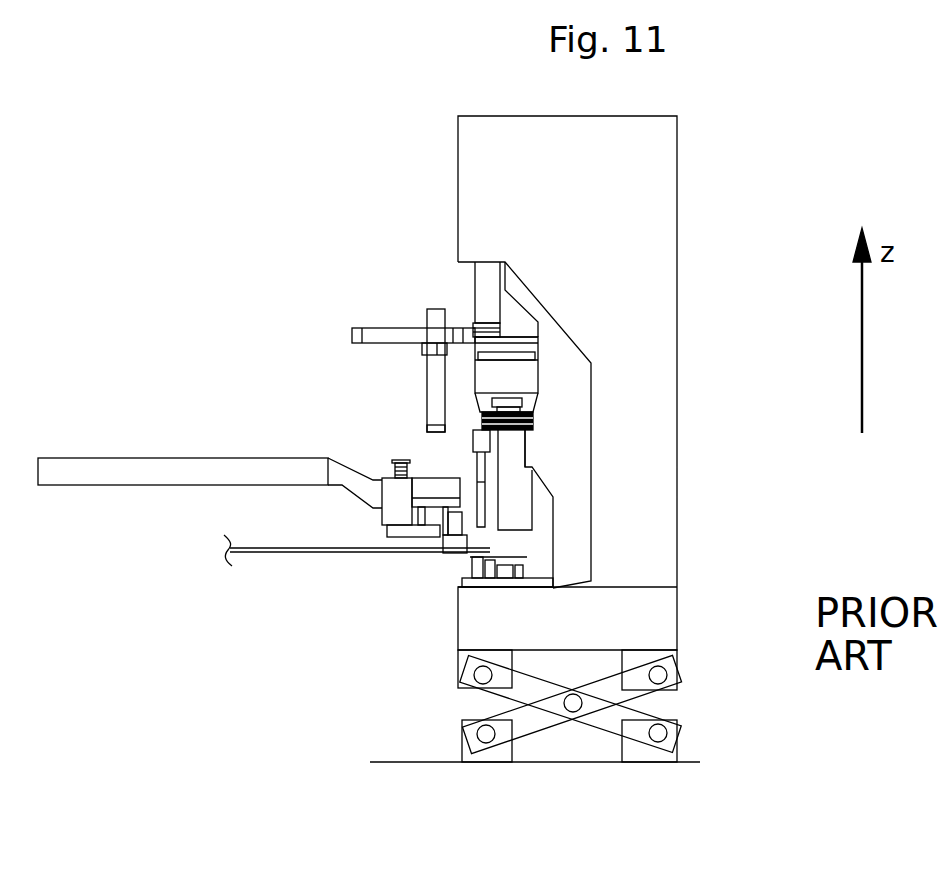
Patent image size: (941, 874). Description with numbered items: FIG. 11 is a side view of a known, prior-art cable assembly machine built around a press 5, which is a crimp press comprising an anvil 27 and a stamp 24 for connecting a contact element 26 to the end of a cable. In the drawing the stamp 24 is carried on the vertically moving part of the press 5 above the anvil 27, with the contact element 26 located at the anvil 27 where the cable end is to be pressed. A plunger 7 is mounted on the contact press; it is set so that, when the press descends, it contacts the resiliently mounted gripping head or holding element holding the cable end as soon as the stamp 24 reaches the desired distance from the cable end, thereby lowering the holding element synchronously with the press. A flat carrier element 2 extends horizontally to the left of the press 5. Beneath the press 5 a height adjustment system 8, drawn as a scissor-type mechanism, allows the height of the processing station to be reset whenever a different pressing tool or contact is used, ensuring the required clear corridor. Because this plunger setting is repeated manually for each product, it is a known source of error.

The workpiece carrier plate 2 is at (120, 458).
The press 5 is at (458, 199).
The plunger 7 is at (427, 405).
The height adjustment system 8 is at (460, 668).
The stamp 24 is at (490, 510).
The contact element 26 is at (500, 556).
The anvil 27 is at (470, 563).